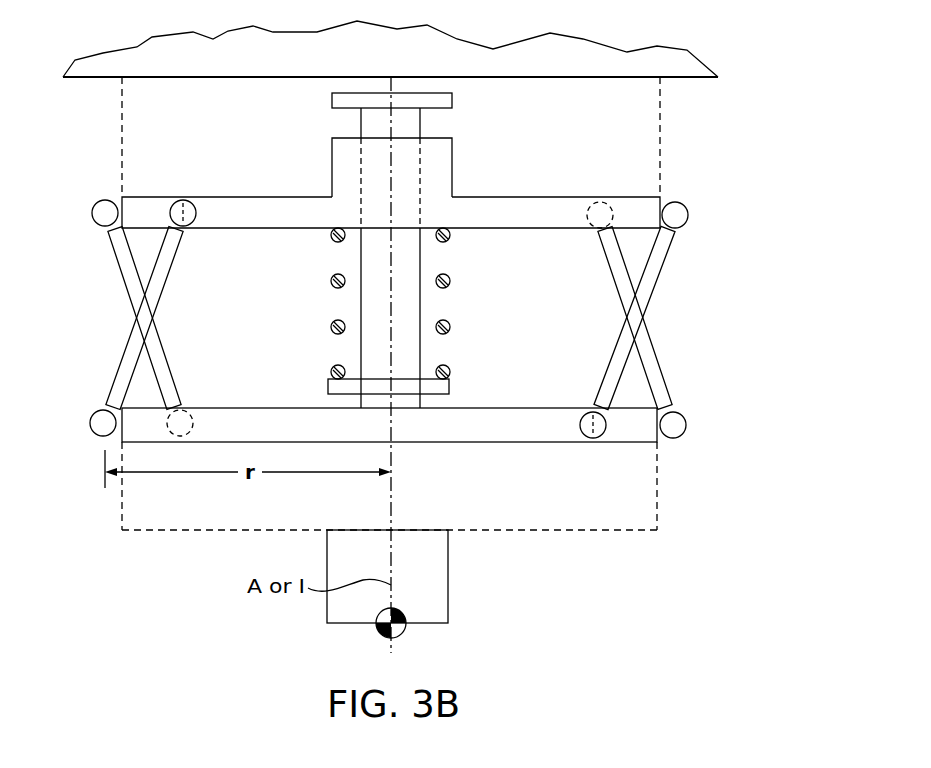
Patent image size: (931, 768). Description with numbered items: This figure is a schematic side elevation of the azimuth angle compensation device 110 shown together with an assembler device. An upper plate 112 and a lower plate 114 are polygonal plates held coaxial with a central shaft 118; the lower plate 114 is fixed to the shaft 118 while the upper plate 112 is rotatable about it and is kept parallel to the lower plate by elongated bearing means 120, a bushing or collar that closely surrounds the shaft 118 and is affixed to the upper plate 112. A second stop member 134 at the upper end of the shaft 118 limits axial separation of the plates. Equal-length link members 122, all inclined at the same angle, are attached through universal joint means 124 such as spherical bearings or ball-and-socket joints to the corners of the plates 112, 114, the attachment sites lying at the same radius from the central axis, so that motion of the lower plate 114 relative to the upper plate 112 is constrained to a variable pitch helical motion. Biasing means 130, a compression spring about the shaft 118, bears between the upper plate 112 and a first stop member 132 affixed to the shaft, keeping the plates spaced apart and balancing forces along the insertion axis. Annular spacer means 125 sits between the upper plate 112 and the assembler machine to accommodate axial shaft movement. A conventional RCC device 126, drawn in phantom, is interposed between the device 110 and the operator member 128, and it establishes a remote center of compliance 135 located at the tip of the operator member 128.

The azimuth angle compensation device 110 is at (808, 281).
The upper plate 112 is at (295, 220).
The lower plate 114 is at (298, 418).
The central shaft 118 is at (102, 84).
The bearing means 120 is at (452, 167).
The link members 122 is at (156, 352).
The universal joint means 124 is at (181, 204).
The annular spacer means 125 is at (617, 116).
The RCC device 126 is at (617, 491).
The operator member 128 is at (460, 565).
The biasing means 130 is at (452, 280).
The first stop member 132 is at (443, 386).
The second stop member 134 is at (340, 108).
The remote center of compliance 135 is at (418, 636).